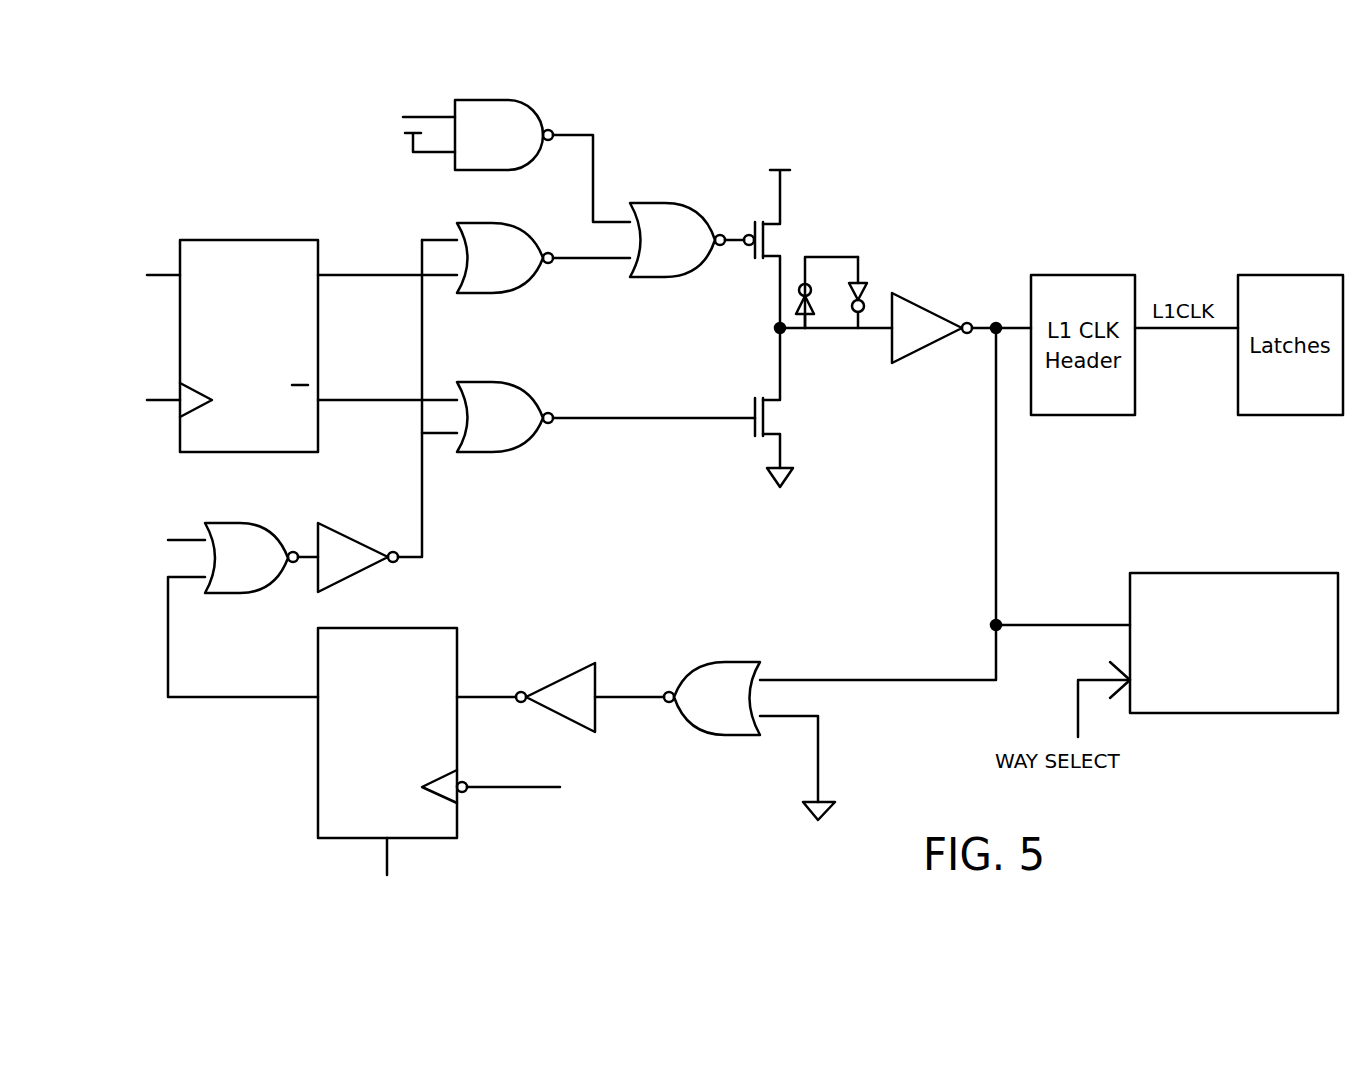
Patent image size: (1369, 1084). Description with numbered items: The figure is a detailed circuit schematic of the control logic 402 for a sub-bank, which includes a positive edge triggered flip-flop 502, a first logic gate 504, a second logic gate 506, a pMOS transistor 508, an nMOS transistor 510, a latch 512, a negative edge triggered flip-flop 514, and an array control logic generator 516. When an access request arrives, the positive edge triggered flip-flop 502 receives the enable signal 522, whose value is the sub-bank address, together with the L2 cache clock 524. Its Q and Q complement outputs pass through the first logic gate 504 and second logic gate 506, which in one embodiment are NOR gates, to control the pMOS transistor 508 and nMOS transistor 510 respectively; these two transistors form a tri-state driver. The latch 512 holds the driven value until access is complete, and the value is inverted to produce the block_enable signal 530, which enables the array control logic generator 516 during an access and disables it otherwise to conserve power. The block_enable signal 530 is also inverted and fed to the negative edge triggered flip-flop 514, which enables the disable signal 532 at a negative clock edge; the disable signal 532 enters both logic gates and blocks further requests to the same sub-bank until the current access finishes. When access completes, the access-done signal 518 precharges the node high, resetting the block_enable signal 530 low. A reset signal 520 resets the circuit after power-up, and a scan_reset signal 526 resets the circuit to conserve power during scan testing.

The control logic 402 is at (1048, 178).
The positive edge triggered flip-flop 502 is at (248, 240).
The first logic gate 504 is at (520, 227).
The second logic gate 506 is at (520, 387).
The pMOS transistor 508 is at (752, 218).
The nMOS transistor 510 is at (752, 393).
The latch 512 is at (828, 255).
The negative edge triggered flip-flop 514 is at (476, 733).
The array control logic generator 516 is at (1234, 643).
The access_done_1 signal 518 is at (429, 161).
The reset signal 520 is at (387, 873).
The enable signal 522 is at (125, 275).
The L2 cache clock 524 is at (126, 407).
The scan_reset signal 526 is at (190, 605).
The block_enable signal 530 is at (975, 440).
The disable signal 532 is at (405, 462).